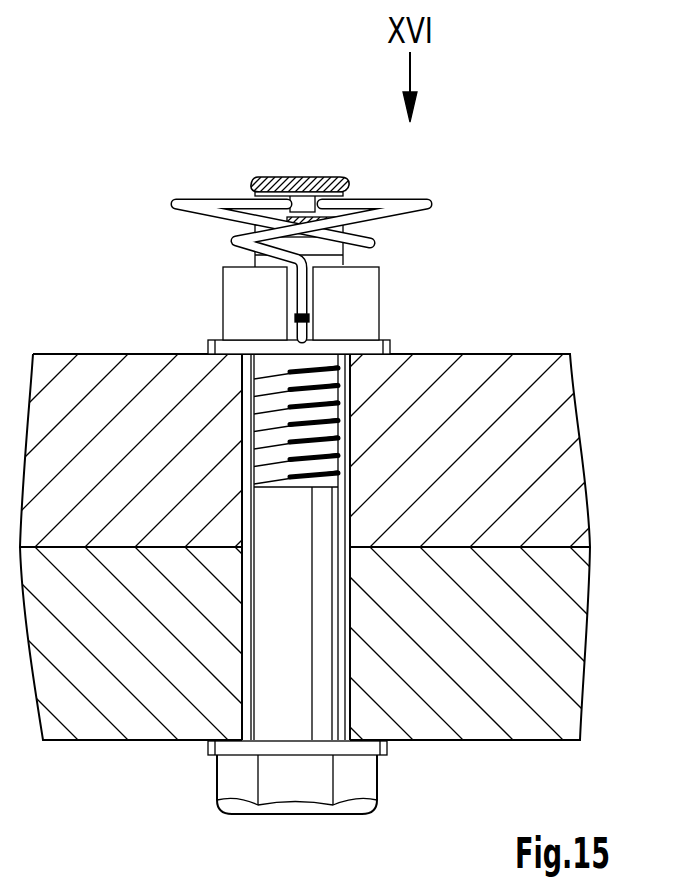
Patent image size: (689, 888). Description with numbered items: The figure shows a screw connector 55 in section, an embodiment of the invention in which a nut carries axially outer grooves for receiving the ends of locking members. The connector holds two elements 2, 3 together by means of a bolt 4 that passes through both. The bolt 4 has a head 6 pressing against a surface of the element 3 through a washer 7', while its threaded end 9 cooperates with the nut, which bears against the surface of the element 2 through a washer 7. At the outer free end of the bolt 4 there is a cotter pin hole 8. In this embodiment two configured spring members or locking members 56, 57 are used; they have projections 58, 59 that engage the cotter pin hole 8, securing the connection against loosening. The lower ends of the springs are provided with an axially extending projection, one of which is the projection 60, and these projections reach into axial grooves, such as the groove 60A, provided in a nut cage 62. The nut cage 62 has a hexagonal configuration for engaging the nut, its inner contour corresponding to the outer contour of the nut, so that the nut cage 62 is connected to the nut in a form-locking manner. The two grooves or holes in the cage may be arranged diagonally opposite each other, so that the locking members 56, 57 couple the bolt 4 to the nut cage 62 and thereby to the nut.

The element 2 is at (565, 458).
The element 3 is at (567, 652).
The bolt 4 is at (265, 683).
The head 6 is at (232, 797).
The washer 7 is at (266, 332).
The washer 7' is at (266, 777).
The cotter pin hole 8 is at (305, 177).
The threaded end 9 is at (353, 418).
The screw connector 55 is at (530, 163).
The locking member 56 is at (175, 171).
The locking member 57 is at (430, 174).
The projection 58 is at (263, 177).
The projection 59 is at (335, 175).
The axially extending projection 60 is at (260, 303).
The axial groove 60A is at (302, 330).
The nut cage 62 is at (370, 308).